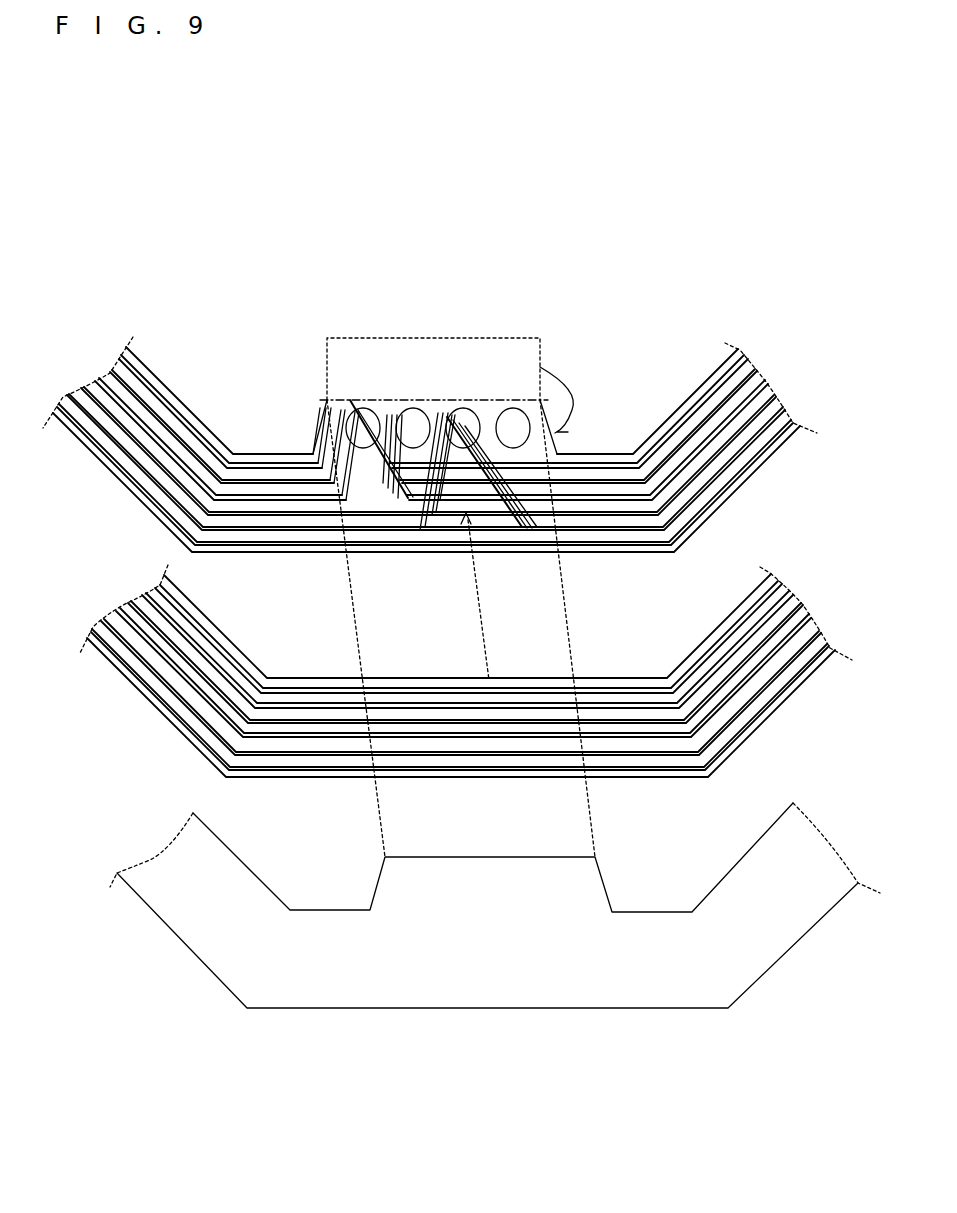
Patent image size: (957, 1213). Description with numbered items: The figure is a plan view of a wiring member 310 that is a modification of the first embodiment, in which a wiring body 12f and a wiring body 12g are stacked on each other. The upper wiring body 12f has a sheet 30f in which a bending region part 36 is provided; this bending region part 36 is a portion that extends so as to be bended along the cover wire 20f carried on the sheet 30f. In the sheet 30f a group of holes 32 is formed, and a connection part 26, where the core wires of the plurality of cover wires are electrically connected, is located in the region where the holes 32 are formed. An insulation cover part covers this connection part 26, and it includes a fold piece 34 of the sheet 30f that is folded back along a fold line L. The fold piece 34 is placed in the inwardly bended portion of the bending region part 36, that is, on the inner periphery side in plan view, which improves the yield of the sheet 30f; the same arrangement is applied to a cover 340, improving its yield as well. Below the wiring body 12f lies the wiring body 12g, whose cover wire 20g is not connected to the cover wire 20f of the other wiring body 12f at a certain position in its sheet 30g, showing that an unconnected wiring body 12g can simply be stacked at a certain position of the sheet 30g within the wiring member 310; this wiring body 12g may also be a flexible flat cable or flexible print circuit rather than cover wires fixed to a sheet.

The wiring member 310 is at (141, 142).
The cover 340 is at (180, 944).
The wiring body 12f is at (121, 485).
The wiring body 12g is at (132, 690).
The cover wire 20f is at (767, 382).
The cover wire 20g is at (800, 606).
The sheet 30f is at (679, 406).
The sheet 30g is at (628, 779).
The fold piece 34 is at (189, 406).
The connection part 26 is at (371, 420).
The bending region part 36 is at (410, 357).
The fold line L is at (457, 403).
The hole 32 is at (523, 413).